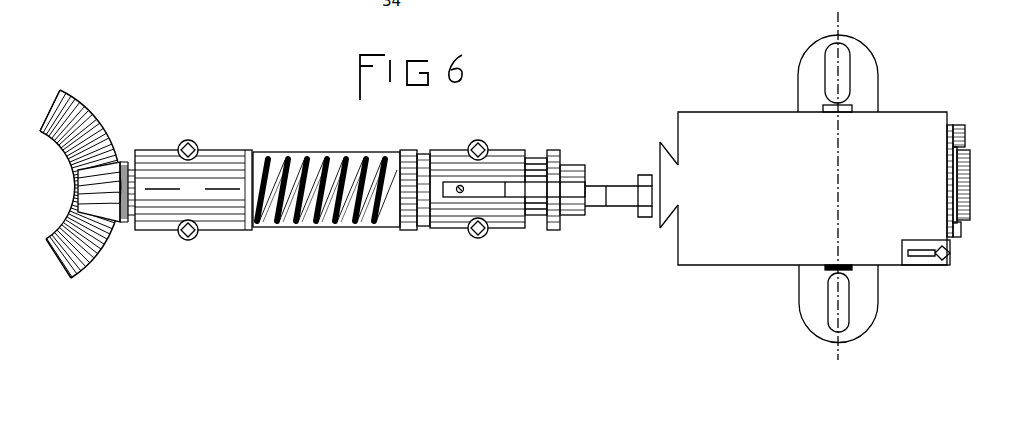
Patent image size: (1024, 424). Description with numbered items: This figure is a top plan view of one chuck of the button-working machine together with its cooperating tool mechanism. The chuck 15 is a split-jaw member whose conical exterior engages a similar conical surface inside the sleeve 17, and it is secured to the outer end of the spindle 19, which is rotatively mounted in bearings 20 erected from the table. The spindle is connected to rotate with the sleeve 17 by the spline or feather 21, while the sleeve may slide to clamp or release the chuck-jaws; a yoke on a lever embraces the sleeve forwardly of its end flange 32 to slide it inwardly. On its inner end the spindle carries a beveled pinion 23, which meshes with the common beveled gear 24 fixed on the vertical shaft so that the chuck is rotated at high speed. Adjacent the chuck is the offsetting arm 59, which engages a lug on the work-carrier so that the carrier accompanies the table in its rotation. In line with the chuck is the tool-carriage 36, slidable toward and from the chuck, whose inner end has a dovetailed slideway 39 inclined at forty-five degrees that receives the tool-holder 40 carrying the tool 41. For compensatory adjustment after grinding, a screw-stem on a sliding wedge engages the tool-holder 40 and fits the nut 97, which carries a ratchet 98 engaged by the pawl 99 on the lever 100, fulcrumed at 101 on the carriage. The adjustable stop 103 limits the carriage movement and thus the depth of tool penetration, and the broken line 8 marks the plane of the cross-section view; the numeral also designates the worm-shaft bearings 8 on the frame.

The beveled gear 24 is at (80, 113).
The beveled pinion 23 is at (80, 187).
The bearings 20 is at (158, 160).
The spindle 19 is at (311, 210).
The spline or feather 21 is at (350, 158).
The end flange 32 is at (408, 150).
The offsetting arm 59 is at (543, 196).
The sleeve 17 is at (536, 158).
The chuck 15 is at (573, 165).
The tool 41 is at (607, 196).
The tool-holder 40 is at (643, 217).
The dovetailed slideway 39 is at (669, 156).
The tool-carriage 36 is at (739, 122).
The bearings 8 is at (838, 187).
The lever 100 is at (947, 163).
The pawl 99 is at (960, 136).
The ratchet 98 is at (970, 180).
The nut 97 is at (970, 197).
The fulcrum 101 is at (961, 230).
The adjustable stop 103 is at (936, 264).